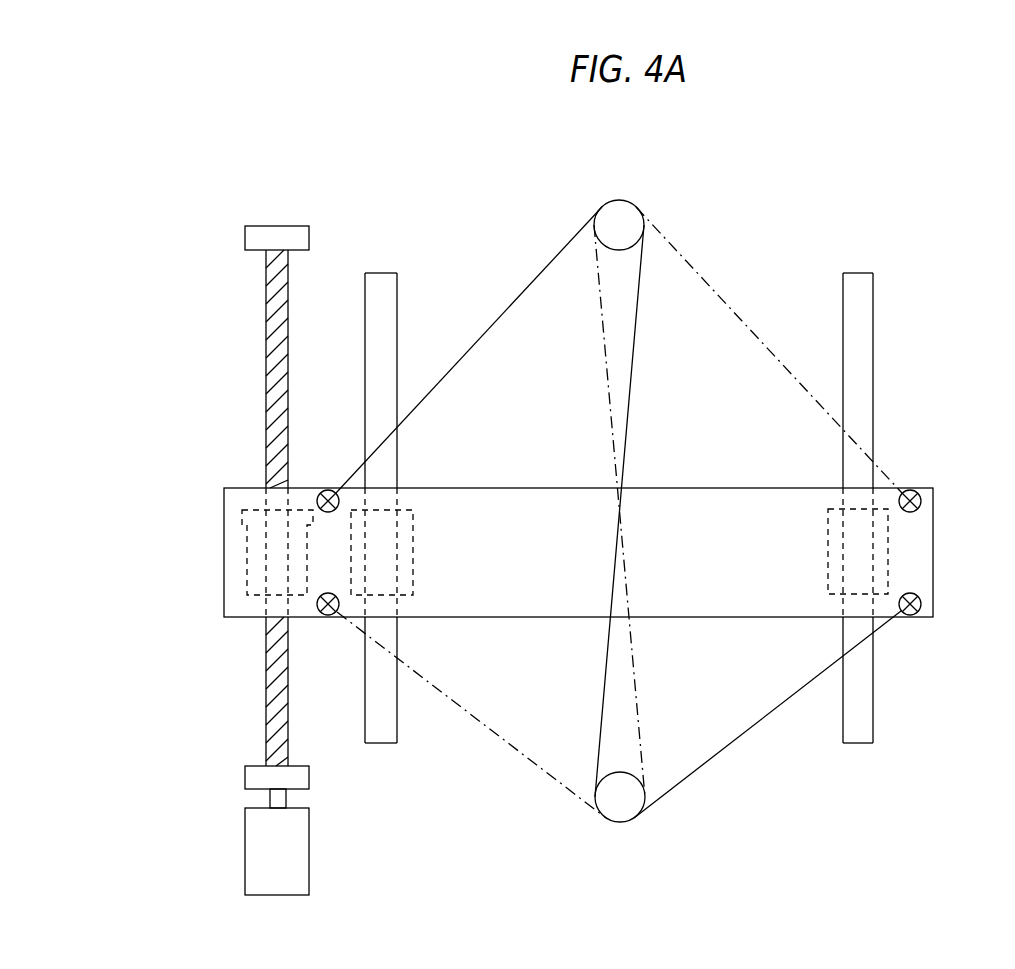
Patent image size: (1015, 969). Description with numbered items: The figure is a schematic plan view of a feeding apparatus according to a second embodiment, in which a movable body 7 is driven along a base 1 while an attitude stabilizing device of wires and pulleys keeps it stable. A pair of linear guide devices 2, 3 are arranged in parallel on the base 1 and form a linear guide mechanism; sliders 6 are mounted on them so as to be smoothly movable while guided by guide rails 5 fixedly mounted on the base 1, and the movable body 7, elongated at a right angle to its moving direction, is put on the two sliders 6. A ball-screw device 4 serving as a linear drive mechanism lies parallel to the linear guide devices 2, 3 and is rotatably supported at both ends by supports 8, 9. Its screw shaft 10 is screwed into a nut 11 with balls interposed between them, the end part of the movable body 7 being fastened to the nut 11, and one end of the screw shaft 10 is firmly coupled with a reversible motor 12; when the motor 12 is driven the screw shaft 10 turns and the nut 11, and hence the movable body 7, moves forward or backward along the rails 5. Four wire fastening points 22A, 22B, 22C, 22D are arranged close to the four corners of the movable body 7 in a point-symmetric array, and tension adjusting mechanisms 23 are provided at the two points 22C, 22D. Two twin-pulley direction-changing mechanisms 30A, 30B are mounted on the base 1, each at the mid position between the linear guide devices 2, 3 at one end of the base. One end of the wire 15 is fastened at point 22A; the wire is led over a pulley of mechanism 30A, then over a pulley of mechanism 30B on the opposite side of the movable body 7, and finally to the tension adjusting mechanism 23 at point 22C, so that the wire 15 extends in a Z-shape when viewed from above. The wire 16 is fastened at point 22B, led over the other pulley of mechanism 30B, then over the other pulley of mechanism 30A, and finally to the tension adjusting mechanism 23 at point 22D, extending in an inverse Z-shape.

The base 1 is at (458, 261).
The linear guide device 2 is at (397, 358).
The linear guide device 3 is at (843, 360).
The ball-screw device 4 is at (262, 645).
The guide rail 5 is at (397, 292).
The slider 6 is at (402, 512).
The movable body 7 is at (512, 597).
The support 8 is at (258, 240).
The support 9 is at (256, 778).
The screw shaft 10 is at (266, 357).
The nut 11 is at (252, 556).
The reversible motor 12 is at (250, 858).
The wire 15 is at (480, 340).
The wire 16 is at (758, 340).
The wire fastening point 22A is at (328, 489).
The wire fastening point 22B is at (328, 616).
The wire fastening point 22C is at (910, 616).
The wire fastening point 22D is at (908, 489).
The tension adjusting mechanism 23 is at (921, 498).
The twin-pulley direction-changing mechanism 30A is at (613, 212).
The twin-pulley direction-changing mechanism 30B is at (627, 808).